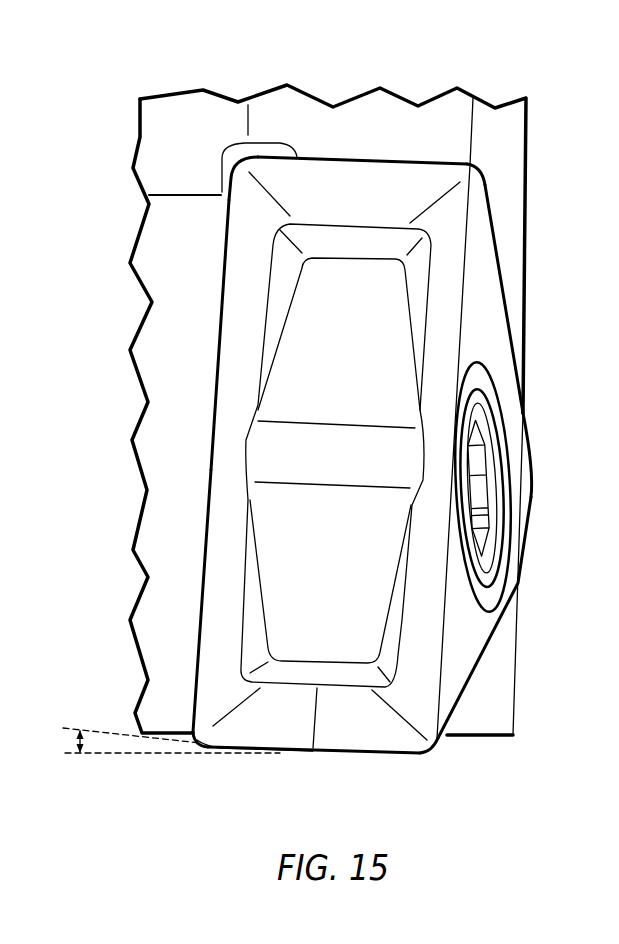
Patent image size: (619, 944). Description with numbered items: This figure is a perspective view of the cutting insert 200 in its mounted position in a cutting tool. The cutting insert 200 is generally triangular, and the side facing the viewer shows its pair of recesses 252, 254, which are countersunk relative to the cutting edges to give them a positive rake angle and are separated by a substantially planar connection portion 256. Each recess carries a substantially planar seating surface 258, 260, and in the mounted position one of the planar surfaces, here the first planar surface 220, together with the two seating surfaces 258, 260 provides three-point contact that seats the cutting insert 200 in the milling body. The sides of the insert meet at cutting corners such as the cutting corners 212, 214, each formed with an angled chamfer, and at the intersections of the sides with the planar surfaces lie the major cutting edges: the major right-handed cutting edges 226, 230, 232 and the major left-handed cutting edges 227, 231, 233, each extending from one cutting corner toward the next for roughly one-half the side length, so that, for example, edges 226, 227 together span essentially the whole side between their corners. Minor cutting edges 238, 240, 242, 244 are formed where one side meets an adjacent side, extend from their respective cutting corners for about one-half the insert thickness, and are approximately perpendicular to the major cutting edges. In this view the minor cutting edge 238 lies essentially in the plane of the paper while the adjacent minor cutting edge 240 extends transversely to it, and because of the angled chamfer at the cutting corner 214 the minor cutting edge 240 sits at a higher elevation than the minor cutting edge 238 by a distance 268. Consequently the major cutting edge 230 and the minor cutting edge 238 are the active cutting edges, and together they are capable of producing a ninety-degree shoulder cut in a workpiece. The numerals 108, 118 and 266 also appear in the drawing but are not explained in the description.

The cutting insert 200 is at (606, 372).
The structure corner 108 is at (440, 746).
The flange lip 118 is at (240, 138).
The cutting corner 212 is at (478, 164).
The cutting corner 214 is at (187, 760).
The first planar surface 220 is at (517, 534).
The major right-handed cutting edge 226 is at (443, 652).
The major left-handed cutting edge 227 is at (467, 298).
The major right-handed cutting edge 230 is at (468, 695).
The major left-handed cutting edge 231 is at (502, 623).
The major right-handed cutting edge 232 is at (220, 337).
The major left-handed cutting edge 233 is at (195, 647).
The minor cutting edge 238 is at (367, 756).
The minor cutting edge 240 is at (234, 756).
The minor cutting edge 242 is at (422, 158).
The minor cutting edge 244 is at (300, 122).
The recess 252 is at (303, 609).
The recess 254 is at (323, 311).
The connection portion 256 is at (290, 452).
The seating surface 258 is at (308, 573).
The seating surface 260 is at (317, 345).
The bottom corner 266 is at (203, 748).
The distance 268 is at (78, 745).